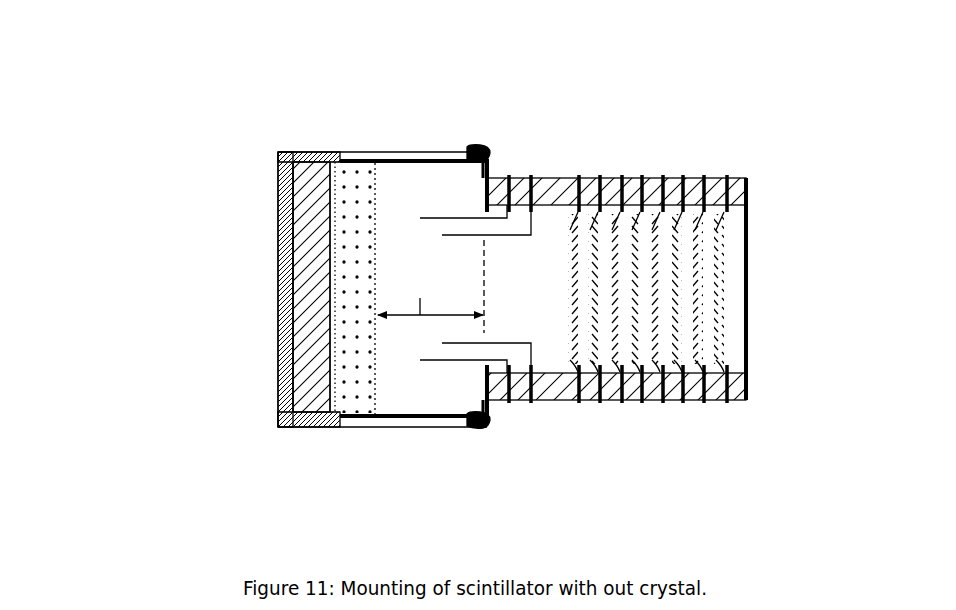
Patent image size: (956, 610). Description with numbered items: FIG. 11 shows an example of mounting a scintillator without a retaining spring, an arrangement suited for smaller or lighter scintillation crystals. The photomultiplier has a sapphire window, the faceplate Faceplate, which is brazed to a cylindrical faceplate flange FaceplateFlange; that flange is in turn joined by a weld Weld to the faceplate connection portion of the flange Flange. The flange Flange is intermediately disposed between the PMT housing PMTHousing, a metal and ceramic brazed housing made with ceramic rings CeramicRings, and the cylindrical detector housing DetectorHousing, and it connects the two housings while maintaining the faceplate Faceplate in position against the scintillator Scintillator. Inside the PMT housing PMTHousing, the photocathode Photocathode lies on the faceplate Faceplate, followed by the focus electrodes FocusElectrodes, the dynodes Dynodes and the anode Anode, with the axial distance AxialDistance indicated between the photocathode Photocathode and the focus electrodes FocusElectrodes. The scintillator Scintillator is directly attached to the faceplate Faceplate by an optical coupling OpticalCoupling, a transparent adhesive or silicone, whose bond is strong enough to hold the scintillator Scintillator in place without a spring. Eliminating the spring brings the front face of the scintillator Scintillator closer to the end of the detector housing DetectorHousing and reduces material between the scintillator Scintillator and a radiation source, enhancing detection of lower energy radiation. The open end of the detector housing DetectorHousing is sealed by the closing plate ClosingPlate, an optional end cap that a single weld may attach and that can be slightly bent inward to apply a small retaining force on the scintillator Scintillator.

The detector housing DetectorHousing is at (283, 152).
The closing plate ClosingPlate is at (278, 290).
The scintillator Scintillator is at (277, 348).
The faceplate Faceplate is at (332, 151).
The optical coupling OpticalCoupling is at (330, 427).
The photocathode Photocathode is at (376, 172).
The faceplate flange FaceplateFlange is at (418, 427).
The weld Weld is at (479, 147).
The flange Flange is at (491, 158).
The PMT housing PMTHousing is at (560, 182).
The ceramic rings CeramicRings is at (723, 401).
The dynodes Dynodes is at (728, 176).
The anode Anode is at (748, 214).
The focus electrodes FocusElectrodes is at (455, 362).
The axial distance AxialDistance is at (431, 286).